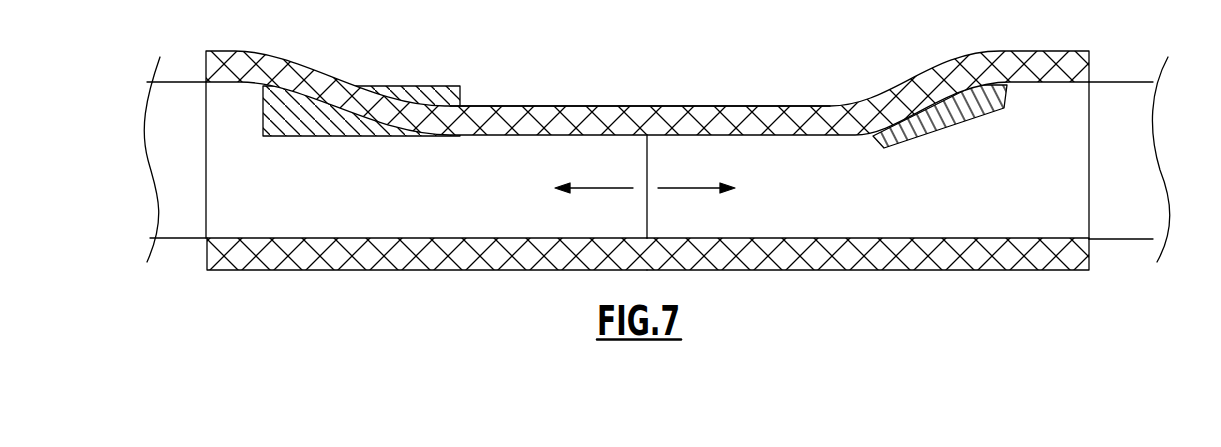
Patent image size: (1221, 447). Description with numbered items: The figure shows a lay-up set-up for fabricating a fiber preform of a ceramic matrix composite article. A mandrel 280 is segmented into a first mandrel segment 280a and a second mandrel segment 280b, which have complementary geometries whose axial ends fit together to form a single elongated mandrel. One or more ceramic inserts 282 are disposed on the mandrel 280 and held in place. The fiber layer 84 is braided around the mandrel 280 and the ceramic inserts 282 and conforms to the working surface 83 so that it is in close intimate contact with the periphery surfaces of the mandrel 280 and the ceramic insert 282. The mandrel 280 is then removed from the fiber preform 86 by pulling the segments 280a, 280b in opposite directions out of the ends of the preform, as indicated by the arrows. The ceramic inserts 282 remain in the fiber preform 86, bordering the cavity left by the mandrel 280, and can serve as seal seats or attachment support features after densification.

The working surface 83 is at (378, 92).
The fiber layer 84 is at (585, 106).
The fiber preform 86 is at (759, 106).
The mandrel 280 is at (608, 177).
The first mandrel segment 280a is at (422, 218).
The second mandrel segment 280b is at (783, 217).
The ceramic insert 282 is at (313, 118).